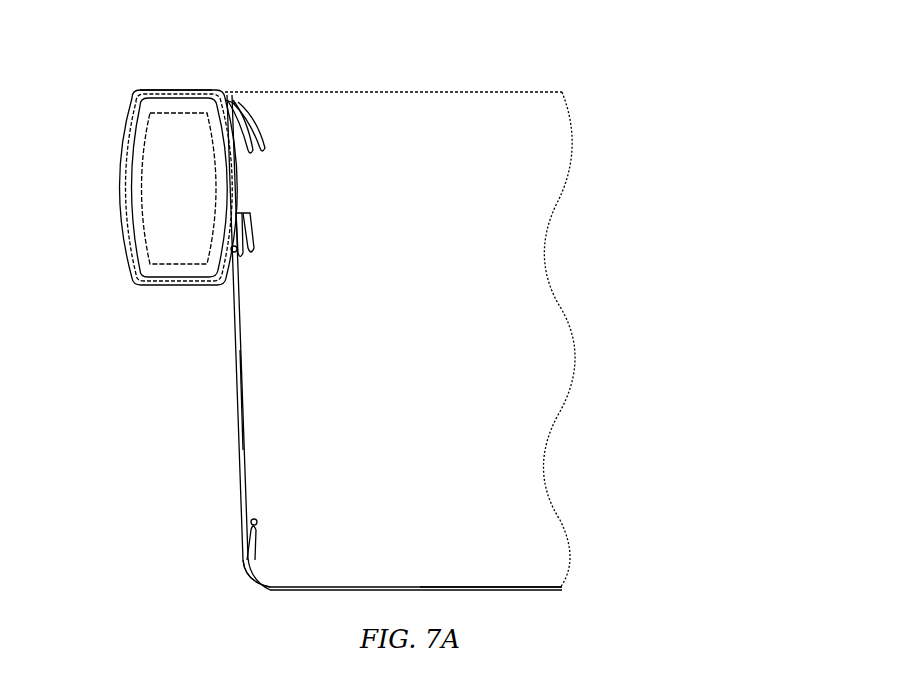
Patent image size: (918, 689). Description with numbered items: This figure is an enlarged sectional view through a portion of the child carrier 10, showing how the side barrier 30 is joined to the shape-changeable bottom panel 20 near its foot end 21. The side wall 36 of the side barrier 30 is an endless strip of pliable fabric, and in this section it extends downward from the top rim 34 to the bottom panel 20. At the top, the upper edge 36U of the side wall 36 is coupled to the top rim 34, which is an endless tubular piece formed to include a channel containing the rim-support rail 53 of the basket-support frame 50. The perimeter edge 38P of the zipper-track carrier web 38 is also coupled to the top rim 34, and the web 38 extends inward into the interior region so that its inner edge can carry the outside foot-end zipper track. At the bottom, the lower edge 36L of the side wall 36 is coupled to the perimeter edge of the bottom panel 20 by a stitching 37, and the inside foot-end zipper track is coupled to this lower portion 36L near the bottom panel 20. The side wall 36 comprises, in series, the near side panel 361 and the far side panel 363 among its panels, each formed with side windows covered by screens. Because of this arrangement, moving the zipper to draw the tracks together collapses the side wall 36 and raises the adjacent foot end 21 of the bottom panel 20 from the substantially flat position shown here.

The child carrier 10 is at (135, 80).
The shape-changeable bottom panel 20 is at (393, 585).
The foot end 21 is at (478, 586).
The side barrier 30 is at (348, 88).
The top rim 34 is at (178, 88).
The side wall 36 is at (238, 438).
The lower edge of side wall 36L is at (243, 578).
The upper edge of side wall 36U is at (243, 205).
The near side panel 361 is at (522, 162).
The far side panel 363 is at (245, 397).
The stitching 37 is at (268, 592).
The zipper-track carrier web 38 is at (250, 128).
The perimeter edge of zipper-track carrier web 38P is at (226, 104).
The basket-support frame 50 is at (150, 290).
The rim-support rail 53 is at (135, 198).